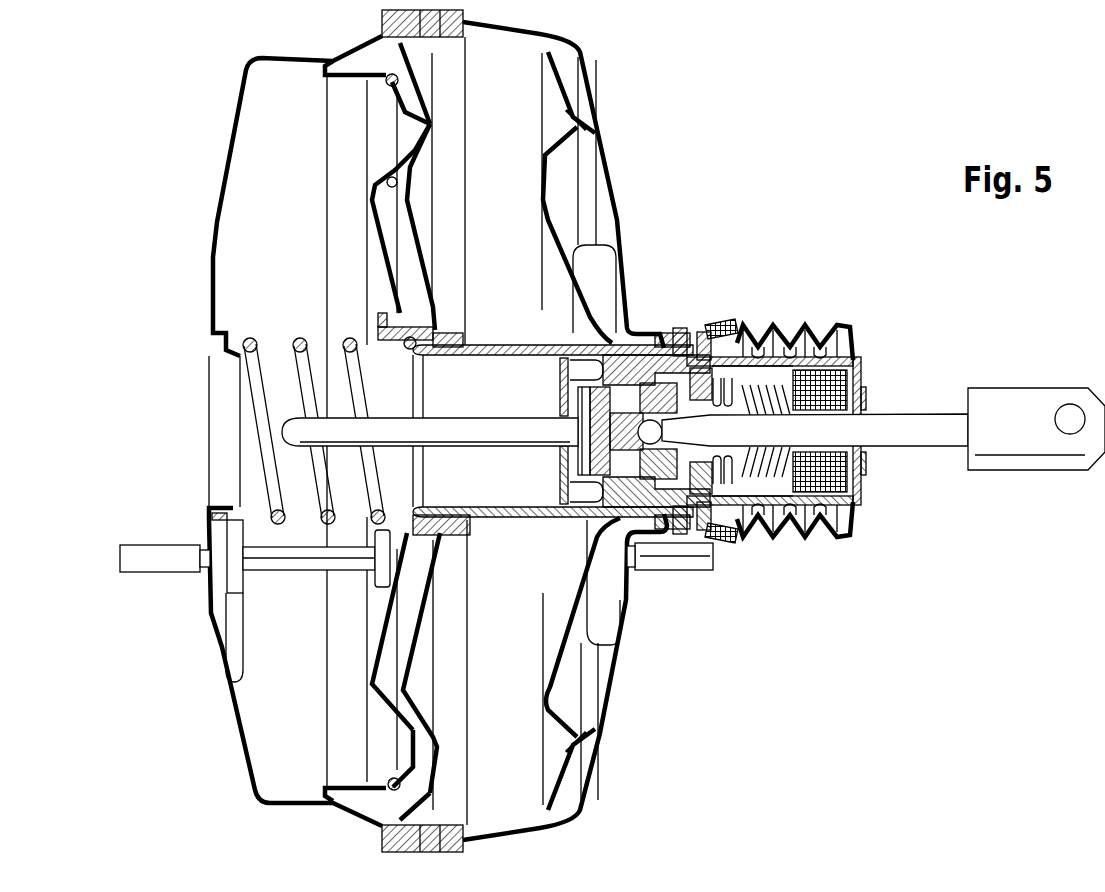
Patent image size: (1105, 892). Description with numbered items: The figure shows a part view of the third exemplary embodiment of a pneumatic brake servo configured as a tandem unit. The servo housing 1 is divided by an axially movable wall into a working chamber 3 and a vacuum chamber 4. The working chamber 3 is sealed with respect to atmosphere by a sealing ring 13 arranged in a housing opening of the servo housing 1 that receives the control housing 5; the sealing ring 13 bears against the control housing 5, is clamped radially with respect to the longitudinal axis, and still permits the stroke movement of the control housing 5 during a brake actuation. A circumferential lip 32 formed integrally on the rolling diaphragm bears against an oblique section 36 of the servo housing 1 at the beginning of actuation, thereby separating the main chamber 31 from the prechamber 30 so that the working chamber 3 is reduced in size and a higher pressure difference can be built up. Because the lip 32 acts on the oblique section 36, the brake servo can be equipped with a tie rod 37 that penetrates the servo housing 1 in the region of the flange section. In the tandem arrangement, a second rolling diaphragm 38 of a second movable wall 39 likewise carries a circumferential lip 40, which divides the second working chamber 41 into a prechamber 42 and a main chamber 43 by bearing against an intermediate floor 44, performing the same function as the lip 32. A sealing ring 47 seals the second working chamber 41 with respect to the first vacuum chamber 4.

The servo housing 1 is at (616, 192).
The working chamber 3 is at (577, 188).
The vacuum chamber 4 is at (483, 237).
The control housing 5 is at (783, 340).
The sealing ring 13 is at (715, 322).
The prechamber 30 is at (597, 268).
The main chamber 31 is at (570, 69).
The circumferential lip 32 is at (593, 116).
The oblique section 36 is at (593, 97).
The tie rod 37 is at (287, 572).
The second rolling diaphragm 38 is at (400, 147).
The second movable wall 39 is at (391, 138).
The circumferential lip 40 is at (396, 186).
The second working chamber 41 is at (421, 287).
The prechamber 42 is at (407, 250).
The main chamber 43 is at (413, 107).
The intermediate floor 44 is at (422, 78).
The sealing ring 47 is at (465, 338).